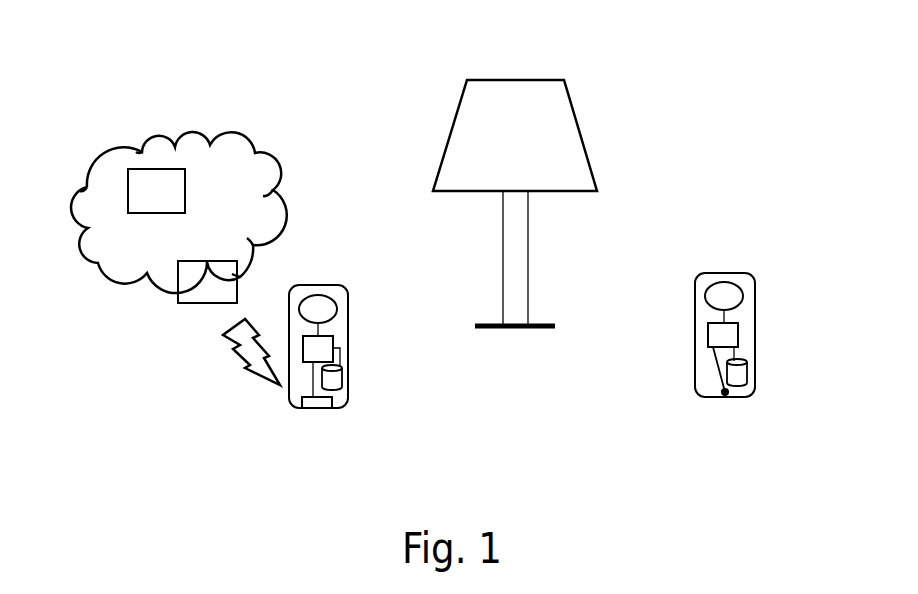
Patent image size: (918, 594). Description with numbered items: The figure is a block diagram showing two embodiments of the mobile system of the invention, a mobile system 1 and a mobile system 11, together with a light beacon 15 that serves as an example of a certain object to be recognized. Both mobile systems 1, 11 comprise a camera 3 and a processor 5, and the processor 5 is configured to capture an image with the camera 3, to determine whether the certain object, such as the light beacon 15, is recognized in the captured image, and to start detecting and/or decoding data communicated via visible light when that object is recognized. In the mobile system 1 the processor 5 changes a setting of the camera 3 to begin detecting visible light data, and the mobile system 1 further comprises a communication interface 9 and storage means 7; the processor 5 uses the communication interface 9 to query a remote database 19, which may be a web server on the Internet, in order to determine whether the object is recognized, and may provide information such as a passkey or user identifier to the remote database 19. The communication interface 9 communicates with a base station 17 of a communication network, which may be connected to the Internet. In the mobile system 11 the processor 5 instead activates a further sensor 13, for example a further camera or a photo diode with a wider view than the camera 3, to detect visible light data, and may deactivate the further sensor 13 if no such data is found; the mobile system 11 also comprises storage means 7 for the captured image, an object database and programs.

The mobile system 1 is at (318, 285).
The camera 3 is at (521, 309).
The processor 5 is at (520, 360).
The storage means 7 is at (344, 378).
The communication interface 9 is at (317, 408).
The mobile system 11 is at (722, 273).
The further sensor 13 is at (726, 396).
The light beacon 15 is at (583, 150).
The base station 17 is at (207, 282).
The remote database 19 is at (179, 212).